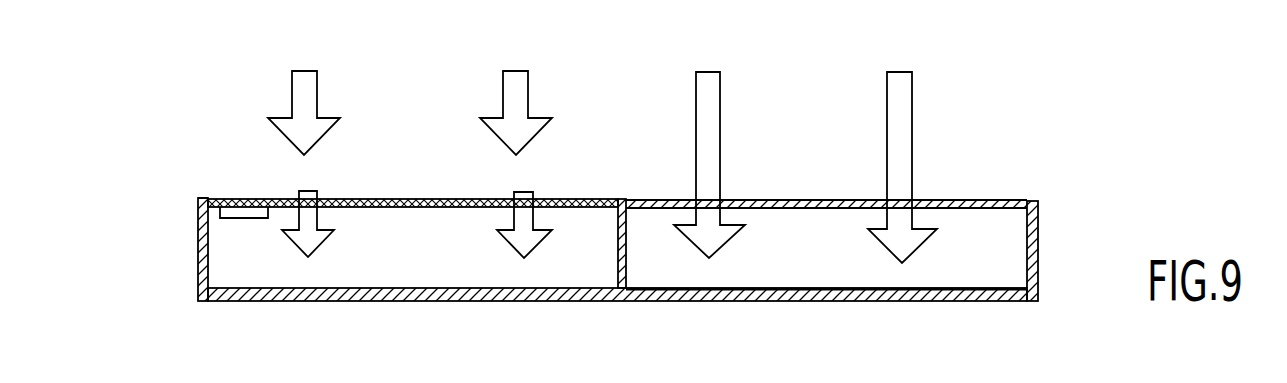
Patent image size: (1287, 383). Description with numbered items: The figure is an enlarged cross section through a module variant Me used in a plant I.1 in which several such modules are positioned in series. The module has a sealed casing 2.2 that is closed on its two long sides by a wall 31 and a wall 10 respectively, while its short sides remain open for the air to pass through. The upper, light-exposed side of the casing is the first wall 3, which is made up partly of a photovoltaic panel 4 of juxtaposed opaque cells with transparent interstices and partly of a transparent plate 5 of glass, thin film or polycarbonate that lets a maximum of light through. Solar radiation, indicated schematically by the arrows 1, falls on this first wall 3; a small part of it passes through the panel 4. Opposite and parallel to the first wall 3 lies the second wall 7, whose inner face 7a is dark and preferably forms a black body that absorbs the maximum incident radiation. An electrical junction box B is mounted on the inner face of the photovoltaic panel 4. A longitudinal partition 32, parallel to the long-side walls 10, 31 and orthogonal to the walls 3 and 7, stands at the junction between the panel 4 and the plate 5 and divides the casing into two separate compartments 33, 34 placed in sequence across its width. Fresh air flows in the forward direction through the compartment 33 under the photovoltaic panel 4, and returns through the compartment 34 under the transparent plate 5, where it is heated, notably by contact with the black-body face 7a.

The arrows indicating solar radiation 1 is at (512, 90).
The module variant Me is at (577, 176).
The plant I.1 is at (748, 163).
The first wall 3 is at (658, 198).
The transparent plate 5 is at (827, 200).
The compartment 34 is at (972, 237).
The photovoltaic panel 4 is at (407, 198).
The electrical junction box B is at (238, 212).
The casing 2.2 is at (218, 195).
The wall 31 is at (198, 247).
The wall 10 is at (1040, 248).
The second wall 7 is at (757, 301).
The inner face 7a is at (838, 293).
The longitudinal partition 32 is at (618, 254).
The compartment 33 is at (390, 257).